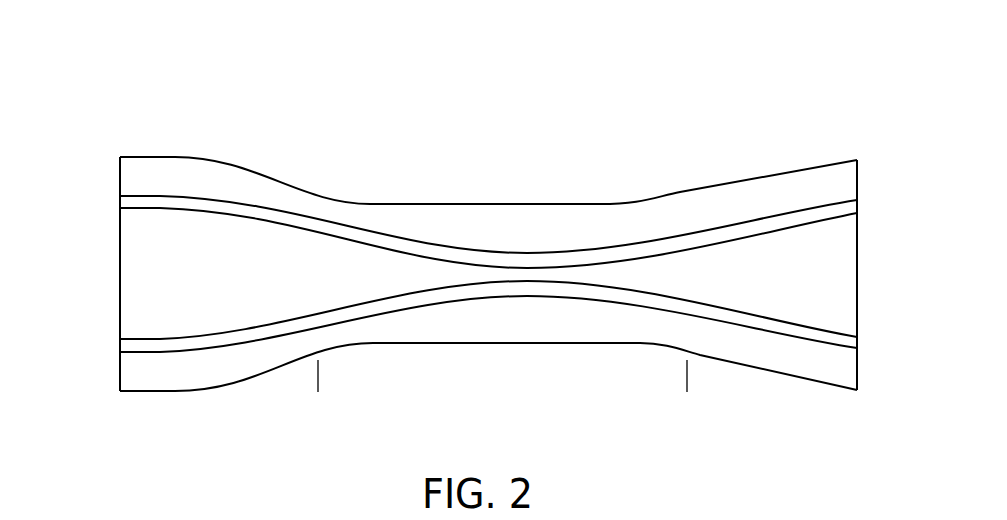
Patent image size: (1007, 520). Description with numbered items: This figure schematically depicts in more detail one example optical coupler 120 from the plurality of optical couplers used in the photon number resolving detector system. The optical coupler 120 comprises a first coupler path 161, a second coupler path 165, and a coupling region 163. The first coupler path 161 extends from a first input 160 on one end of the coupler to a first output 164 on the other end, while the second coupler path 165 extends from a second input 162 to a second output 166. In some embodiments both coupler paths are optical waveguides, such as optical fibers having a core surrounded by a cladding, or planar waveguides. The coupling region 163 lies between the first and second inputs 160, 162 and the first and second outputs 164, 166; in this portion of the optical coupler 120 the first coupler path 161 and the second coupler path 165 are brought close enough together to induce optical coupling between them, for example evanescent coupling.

The optical coupler 120 is at (755, 97).
The first input 160 is at (118, 200).
The first coupler path 161 is at (157, 196).
The second input 162 is at (118, 347).
The coupling region 163 is at (687, 387).
The first output 164 is at (859, 200).
The second coupler path 165 is at (155, 353).
The second output 166 is at (859, 348).